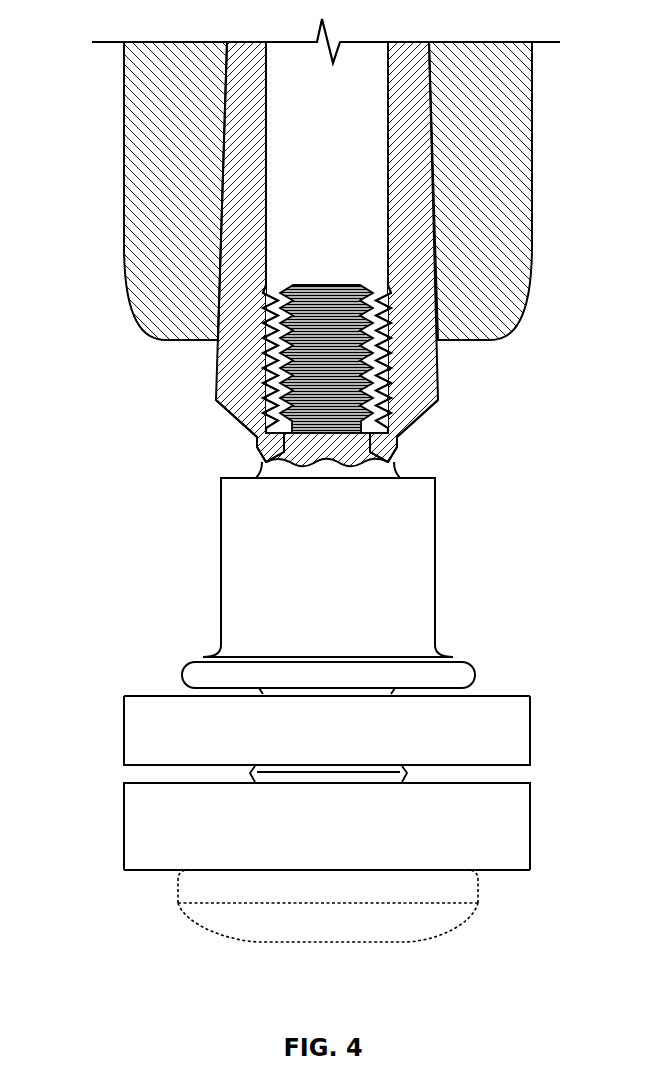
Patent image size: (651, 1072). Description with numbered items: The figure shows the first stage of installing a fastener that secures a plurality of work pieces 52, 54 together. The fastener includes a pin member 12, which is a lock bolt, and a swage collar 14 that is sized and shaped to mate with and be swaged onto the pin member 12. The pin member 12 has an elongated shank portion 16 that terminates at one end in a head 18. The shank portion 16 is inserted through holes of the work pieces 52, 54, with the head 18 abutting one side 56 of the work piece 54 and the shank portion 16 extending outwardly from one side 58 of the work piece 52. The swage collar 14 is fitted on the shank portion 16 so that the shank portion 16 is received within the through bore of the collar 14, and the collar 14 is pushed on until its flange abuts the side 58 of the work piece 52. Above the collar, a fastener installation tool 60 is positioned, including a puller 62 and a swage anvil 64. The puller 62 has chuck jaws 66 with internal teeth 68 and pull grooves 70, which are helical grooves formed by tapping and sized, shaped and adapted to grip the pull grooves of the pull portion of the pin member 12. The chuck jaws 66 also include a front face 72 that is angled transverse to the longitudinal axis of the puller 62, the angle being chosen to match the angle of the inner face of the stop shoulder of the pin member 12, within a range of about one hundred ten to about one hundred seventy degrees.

The pin member 12 is at (251, 921).
The swage collar 14 is at (247, 588).
The shank portion 16 is at (257, 457).
The head 18 is at (203, 910).
The work piece 52 is at (304, 700).
The work piece 54 is at (301, 862).
The side of the work piece 56 is at (497, 873).
The side of the work piece 58 is at (512, 694).
The fastener installation tool 60 is at (290, 253).
The puller 62 is at (280, 253).
The swage anvil 64 is at (157, 222).
The chuck jaws 66 is at (237, 353).
The internal teeth 68 is at (247, 377).
The pull grooves 70 is at (265, 396).
The front face 72 is at (244, 430).